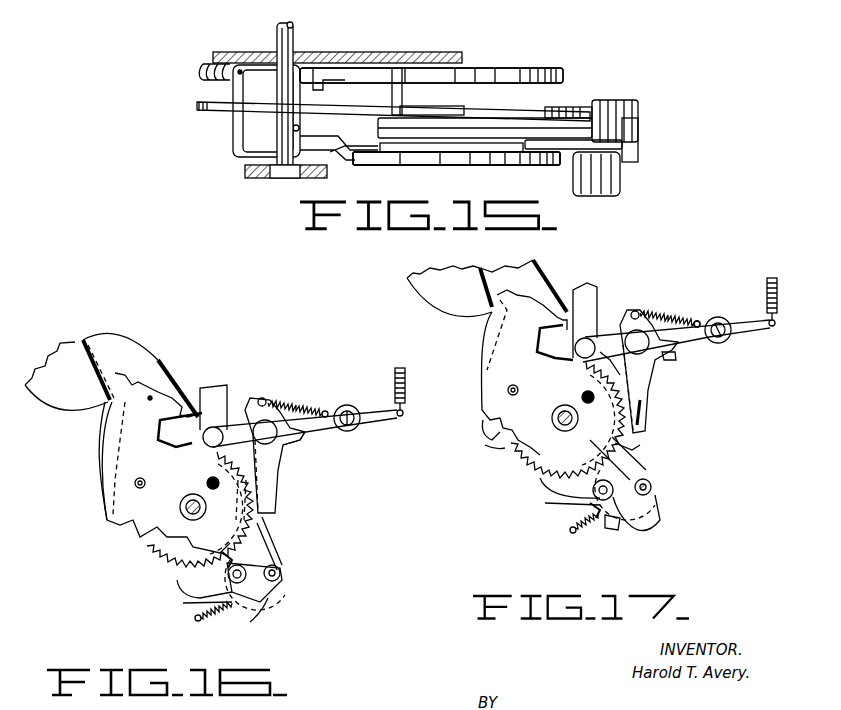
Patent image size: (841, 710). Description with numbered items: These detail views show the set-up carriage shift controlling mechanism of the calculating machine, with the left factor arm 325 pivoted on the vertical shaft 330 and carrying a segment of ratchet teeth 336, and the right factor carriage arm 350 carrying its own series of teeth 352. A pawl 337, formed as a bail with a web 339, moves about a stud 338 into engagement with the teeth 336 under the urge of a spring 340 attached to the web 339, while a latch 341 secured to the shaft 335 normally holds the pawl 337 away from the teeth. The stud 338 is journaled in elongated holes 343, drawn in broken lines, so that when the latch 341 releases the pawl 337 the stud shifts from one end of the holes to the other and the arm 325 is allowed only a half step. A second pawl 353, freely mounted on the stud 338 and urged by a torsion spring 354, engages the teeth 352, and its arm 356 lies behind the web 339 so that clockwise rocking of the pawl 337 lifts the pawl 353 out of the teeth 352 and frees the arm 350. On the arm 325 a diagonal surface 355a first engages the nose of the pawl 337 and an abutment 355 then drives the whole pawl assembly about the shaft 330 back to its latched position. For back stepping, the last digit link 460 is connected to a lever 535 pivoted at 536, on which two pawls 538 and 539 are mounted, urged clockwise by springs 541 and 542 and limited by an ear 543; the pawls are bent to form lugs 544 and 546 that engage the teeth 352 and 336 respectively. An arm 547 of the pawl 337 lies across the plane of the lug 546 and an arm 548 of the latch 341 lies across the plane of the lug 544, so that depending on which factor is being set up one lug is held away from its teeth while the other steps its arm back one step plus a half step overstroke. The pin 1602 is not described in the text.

In FIG. 15, the arm 325 is at (555, 166).
In FIG. 16, the arm 325 is at (137, 331).
In FIG. 17, the arm 325 is at (426, 292).
In FIG. 16, the vertical shaft 330 is at (180, 507).
In FIG. 17, the vertical shaft 330 is at (552, 418).
In FIG. 15, the shaft 335 is at (296, 28).
In FIG. 16, the shaft 335 is at (281, 573).
In FIG. 17, the shaft 335 is at (652, 486).
In FIG. 15, the ratchet teeth 336 is at (505, 168).
In FIG. 16, the ratchet teeth 336 is at (160, 556).
In FIG. 17, the ratchet teeth 336 is at (520, 465).
In FIG. 16, the pawl 337 is at (188, 596).
In FIG. 17, the pawl 337 is at (555, 493).
In FIG. 16, the stud 338 is at (228, 557).
In FIG. 17, the stud 338 is at (590, 507).
In FIG. 15, the web 339 is at (235, 137).
In FIG. 17, the web 339 is at (612, 532).
In FIG. 16, the spring 340 is at (218, 616).
In FIG. 17, the spring 340 is at (582, 528).
In FIG. 15, the latch 341 is at (205, 108).
In FIG. 16, the latch 341 is at (260, 590).
In FIG. 17, the latch 341 is at (650, 532).
In FIG. 16, the elongated holes 343 is at (272, 605).
In FIG. 17, the elongated holes 343 is at (648, 505).
In FIG. 15, the right factor carriage arm 350 is at (580, 65).
In FIG. 16, the right factor carriage arm 350 is at (197, 373).
In FIG. 17, the right factor carriage arm 350 is at (490, 325).
In FIG. 15, the teeth 352 is at (492, 71).
In FIG. 16, the teeth 352 is at (178, 455).
In FIG. 17, the teeth 352 is at (612, 375).
In FIG. 15, the second pawl 353 is at (350, 72).
In FIG. 17, the second pawl 353 is at (642, 452).
In FIG. 16, the torsion spring 354 is at (248, 565).
In FIG. 17, the abutment 355 is at (487, 416).
In FIG. 17, the diagonal surface 355a is at (500, 440).
In FIG. 16, the arm 356 is at (257, 617).
In FIG. 16, the last digit link 460 is at (210, 393).
In FIG. 17, the last digit link 460 is at (590, 292).
In FIG. 15, the lever 535 is at (622, 145).
In FIG. 16, the lever 535 is at (233, 428).
In FIG. 17, the lever 535 is at (608, 340).
In FIG. 16, the pivot 536 is at (346, 414).
In FIG. 17, the pivot 536 is at (722, 326).
In FIG. 15, the pawl 538 is at (506, 120).
In FIG. 16, the pawl 538 is at (275, 464).
In FIG. 17, the pawl 538 is at (650, 390).
In FIG. 15, the pawl 539 is at (555, 125).
In FIG. 16, the pawl 539 is at (270, 480).
In FIG. 17, the pawl 539 is at (645, 418).
In FIG. 15, the spring 541 is at (618, 100).
In FIG. 16, the spring 541 is at (296, 404).
In FIG. 17, the spring 541 is at (665, 320).
In FIG. 15, the spring 542 is at (622, 170).
In FIG. 17, the spring 542 is at (678, 316).
In FIG. 17, the ear 543 is at (668, 358).
In FIG. 15, the lug 544 is at (432, 102).
In FIG. 16, the lug 544 is at (272, 503).
In FIG. 15, the lug 546 is at (392, 165).
In FIG. 16, the lug 546 is at (265, 518).
In FIG. 15, the arm 547 is at (372, 150).
In FIG. 16, the arm 547 is at (214, 470).
In FIG. 17, the arm 547 is at (645, 435).
In FIG. 15, the arm 548 is at (372, 108).
In FIG. 16, the arm 548 is at (268, 542).
In FIG. 17, the arm 548 is at (632, 470).
In FIG. 16, the pin 1602 is at (146, 484).
In FIG. 17, the pin 1602 is at (520, 380).